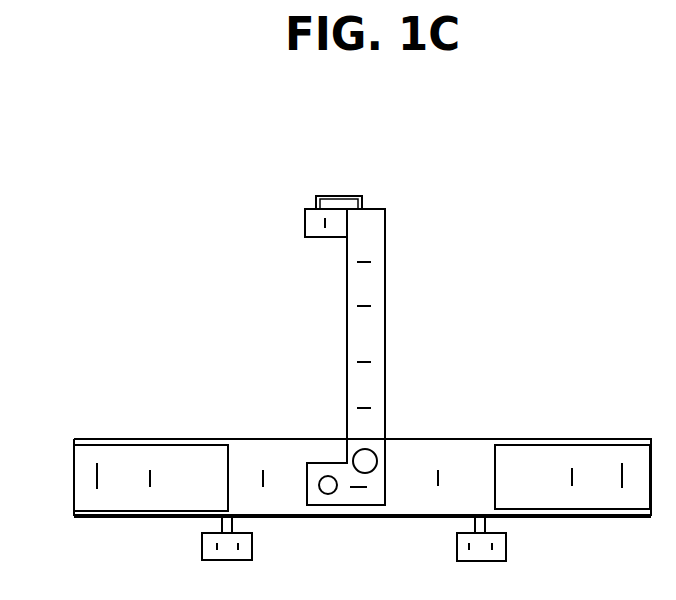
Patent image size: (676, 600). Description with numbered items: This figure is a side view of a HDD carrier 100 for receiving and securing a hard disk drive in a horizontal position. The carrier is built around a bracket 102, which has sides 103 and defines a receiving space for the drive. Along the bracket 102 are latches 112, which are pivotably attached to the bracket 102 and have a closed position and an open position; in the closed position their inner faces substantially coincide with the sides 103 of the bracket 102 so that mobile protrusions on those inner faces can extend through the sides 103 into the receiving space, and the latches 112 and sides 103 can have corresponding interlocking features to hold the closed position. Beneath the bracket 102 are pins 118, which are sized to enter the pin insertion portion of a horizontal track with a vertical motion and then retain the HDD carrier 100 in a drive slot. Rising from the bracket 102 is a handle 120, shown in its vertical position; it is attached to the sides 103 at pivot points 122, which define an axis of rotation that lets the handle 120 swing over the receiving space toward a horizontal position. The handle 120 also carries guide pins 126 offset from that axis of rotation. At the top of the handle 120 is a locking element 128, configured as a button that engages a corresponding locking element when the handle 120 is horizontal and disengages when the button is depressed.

The HDD carrier 100 is at (600, 272).
The bracket 102 is at (598, 438).
The sides 103 is at (268, 458).
The latches 112 is at (125, 477).
The pins 118 is at (202, 543).
The handle 120 is at (386, 279).
The pivot points 122 is at (328, 494).
The guide pins 126 is at (366, 449).
The locking element 128 is at (345, 194).